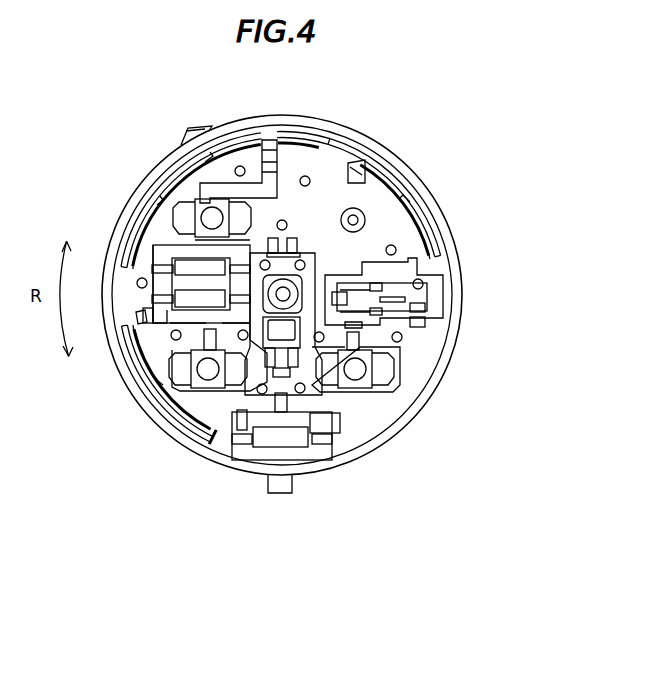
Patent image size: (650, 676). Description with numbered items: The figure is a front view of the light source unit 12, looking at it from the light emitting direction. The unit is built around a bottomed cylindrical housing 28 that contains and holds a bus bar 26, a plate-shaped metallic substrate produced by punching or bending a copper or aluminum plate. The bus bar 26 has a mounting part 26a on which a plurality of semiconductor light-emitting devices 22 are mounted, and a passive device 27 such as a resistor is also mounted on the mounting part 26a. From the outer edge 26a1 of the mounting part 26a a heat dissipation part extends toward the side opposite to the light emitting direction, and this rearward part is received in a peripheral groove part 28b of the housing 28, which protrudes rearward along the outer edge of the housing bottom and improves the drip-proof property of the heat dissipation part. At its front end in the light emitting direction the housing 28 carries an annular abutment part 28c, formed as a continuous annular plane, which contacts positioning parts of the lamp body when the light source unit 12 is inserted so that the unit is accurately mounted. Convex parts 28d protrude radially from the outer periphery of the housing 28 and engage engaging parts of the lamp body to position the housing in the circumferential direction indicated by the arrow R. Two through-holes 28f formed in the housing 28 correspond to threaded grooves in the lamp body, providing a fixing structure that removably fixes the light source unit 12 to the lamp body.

The light source unit 12 is at (292, 550).
The semiconductor light-emitting device 22 is at (198, 214).
The bus bar 26 is at (363, 402).
The mounting part 26a is at (327, 166).
The outer edge 26a1 is at (384, 178).
The passive device 27 is at (190, 298).
The housing 28 is at (441, 190).
The peripheral groove part 28b is at (240, 144).
The abutment part 28c is at (138, 198).
The convex part 28d is at (273, 494).
The through-hole 28f is at (362, 210).